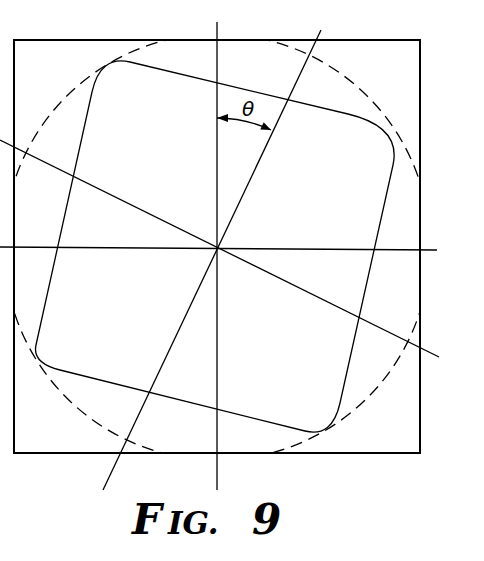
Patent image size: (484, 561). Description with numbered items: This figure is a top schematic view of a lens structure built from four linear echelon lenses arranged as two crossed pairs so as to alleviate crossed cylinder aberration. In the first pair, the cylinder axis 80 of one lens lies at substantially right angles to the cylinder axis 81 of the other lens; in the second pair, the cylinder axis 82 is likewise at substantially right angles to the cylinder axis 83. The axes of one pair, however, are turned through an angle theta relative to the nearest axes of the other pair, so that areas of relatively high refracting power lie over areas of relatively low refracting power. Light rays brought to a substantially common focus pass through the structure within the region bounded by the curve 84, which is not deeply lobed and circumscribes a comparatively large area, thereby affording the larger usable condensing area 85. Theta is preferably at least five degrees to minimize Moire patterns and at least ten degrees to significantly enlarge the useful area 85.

The cylinder axis 80 is at (217, 24).
The cylinder axis 81 is at (437, 250).
The cylinder axis 82 is at (321, 30).
The cylinder axis 83 is at (439, 357).
The curve 84 is at (367, 103).
The usable condensing area 85 is at (381, 213).